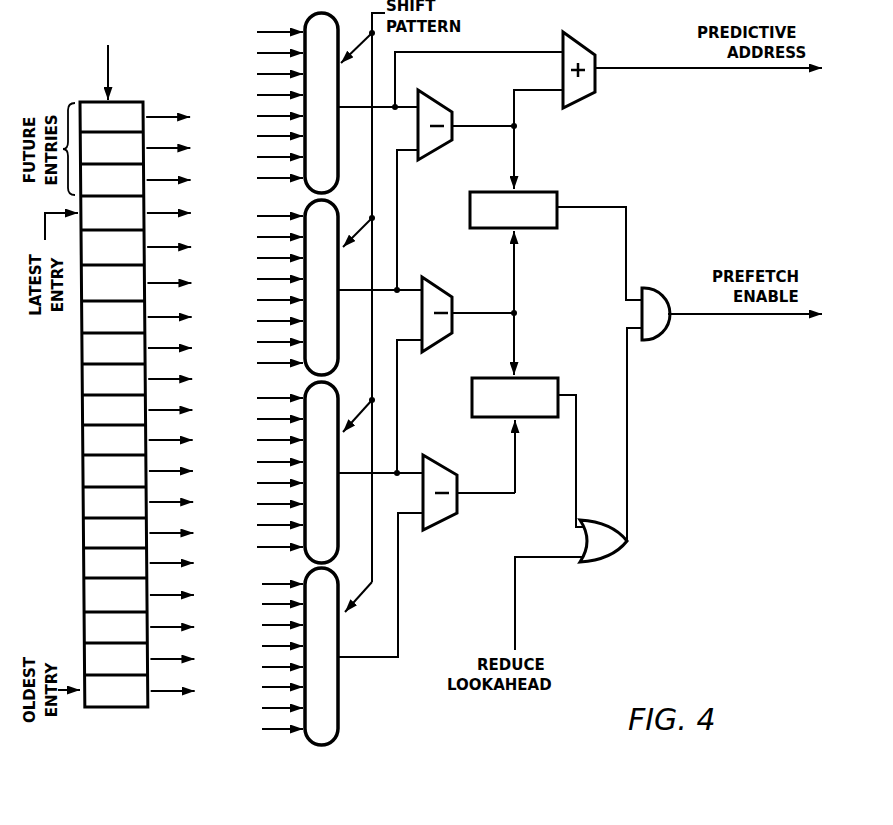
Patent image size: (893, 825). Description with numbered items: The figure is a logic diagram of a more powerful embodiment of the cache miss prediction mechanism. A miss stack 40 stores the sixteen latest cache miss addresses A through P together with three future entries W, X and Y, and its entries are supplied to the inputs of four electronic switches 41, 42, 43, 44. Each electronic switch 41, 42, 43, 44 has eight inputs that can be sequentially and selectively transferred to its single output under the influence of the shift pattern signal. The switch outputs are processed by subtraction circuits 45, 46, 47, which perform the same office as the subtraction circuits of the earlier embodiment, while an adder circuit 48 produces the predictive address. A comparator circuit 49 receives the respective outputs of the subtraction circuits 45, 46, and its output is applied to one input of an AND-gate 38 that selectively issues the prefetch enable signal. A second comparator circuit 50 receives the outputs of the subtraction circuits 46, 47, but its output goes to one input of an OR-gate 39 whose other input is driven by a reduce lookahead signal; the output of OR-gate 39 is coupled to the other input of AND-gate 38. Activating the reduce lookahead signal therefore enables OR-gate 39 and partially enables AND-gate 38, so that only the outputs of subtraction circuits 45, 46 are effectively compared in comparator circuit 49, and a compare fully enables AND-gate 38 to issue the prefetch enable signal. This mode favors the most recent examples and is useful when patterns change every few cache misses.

The AND-gate 38 is at (650, 288).
The OR-gate 39 is at (617, 562).
The miss stack 40 is at (76, 435).
The electronic switch 41 is at (338, 168).
The electronic switch 42 is at (338, 352).
The electronic switch 43 is at (338, 537).
The electronic switch 44 is at (340, 735).
The subtraction circuit 45 is at (437, 97).
The subtraction circuit 46 is at (443, 278).
The subtraction circuit 47 is at (458, 438).
The adder circuit 48 is at (588, 50).
The comparator circuit 49 is at (548, 192).
The comparator circuit 50 is at (551, 378).